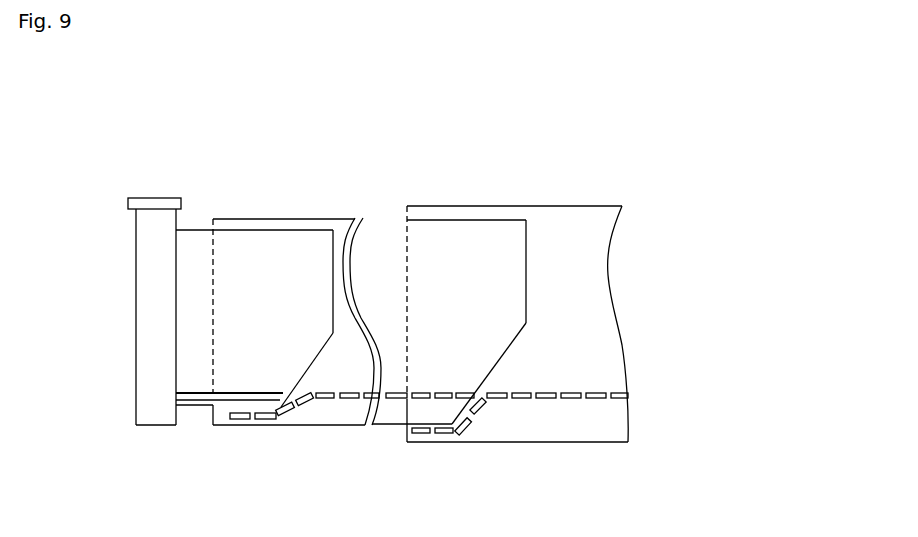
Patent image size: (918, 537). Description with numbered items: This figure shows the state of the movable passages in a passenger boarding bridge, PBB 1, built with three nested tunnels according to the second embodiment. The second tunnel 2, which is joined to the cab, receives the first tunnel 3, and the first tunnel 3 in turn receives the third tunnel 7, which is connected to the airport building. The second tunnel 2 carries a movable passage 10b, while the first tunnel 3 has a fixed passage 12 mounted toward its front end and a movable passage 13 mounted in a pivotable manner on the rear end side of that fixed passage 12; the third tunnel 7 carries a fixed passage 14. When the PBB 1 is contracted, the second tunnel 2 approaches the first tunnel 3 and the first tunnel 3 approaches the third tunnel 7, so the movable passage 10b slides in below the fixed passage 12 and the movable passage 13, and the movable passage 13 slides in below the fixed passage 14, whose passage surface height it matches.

The PBB 1 is at (521, 187).
The second tunnel 2 is at (602, 213).
The first tunnel 3 is at (378, 230).
The third tunnel 7 is at (190, 243).
The movable passage 10b is at (557, 395).
The fixed passage 12 is at (450, 398).
The movable passage 13 is at (327, 398).
The fixed passage 14 is at (193, 397).